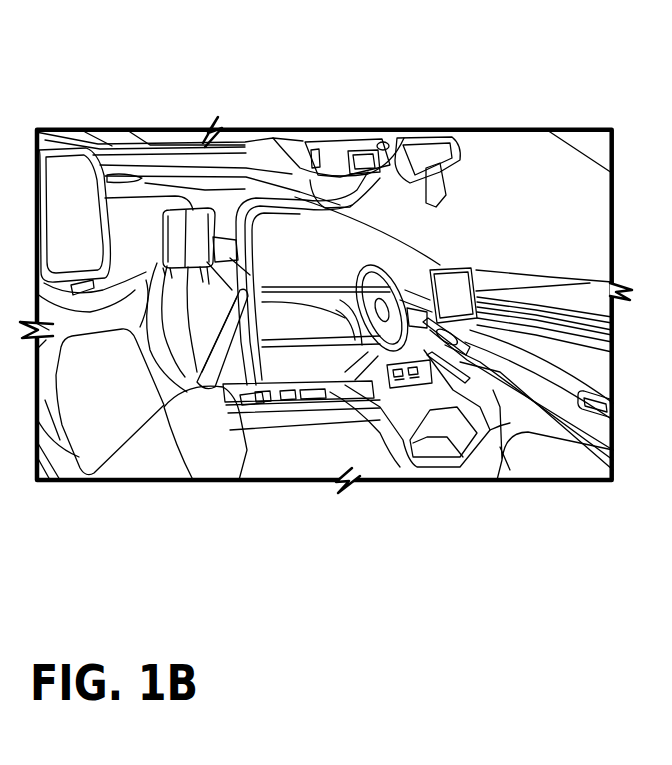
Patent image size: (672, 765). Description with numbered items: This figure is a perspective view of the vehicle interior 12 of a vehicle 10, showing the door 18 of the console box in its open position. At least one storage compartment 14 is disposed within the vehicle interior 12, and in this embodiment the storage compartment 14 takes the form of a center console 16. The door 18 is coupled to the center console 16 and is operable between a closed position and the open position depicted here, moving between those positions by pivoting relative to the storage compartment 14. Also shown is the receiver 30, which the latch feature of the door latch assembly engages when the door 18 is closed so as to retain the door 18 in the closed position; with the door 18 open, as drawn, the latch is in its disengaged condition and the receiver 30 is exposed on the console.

The vehicle 10 is at (338, 124).
The vehicle interior 12 is at (261, 182).
The storage compartment 14 is at (272, 367).
The center console 16 is at (308, 387).
The door 18 is at (216, 343).
The receiver 30 is at (262, 398).